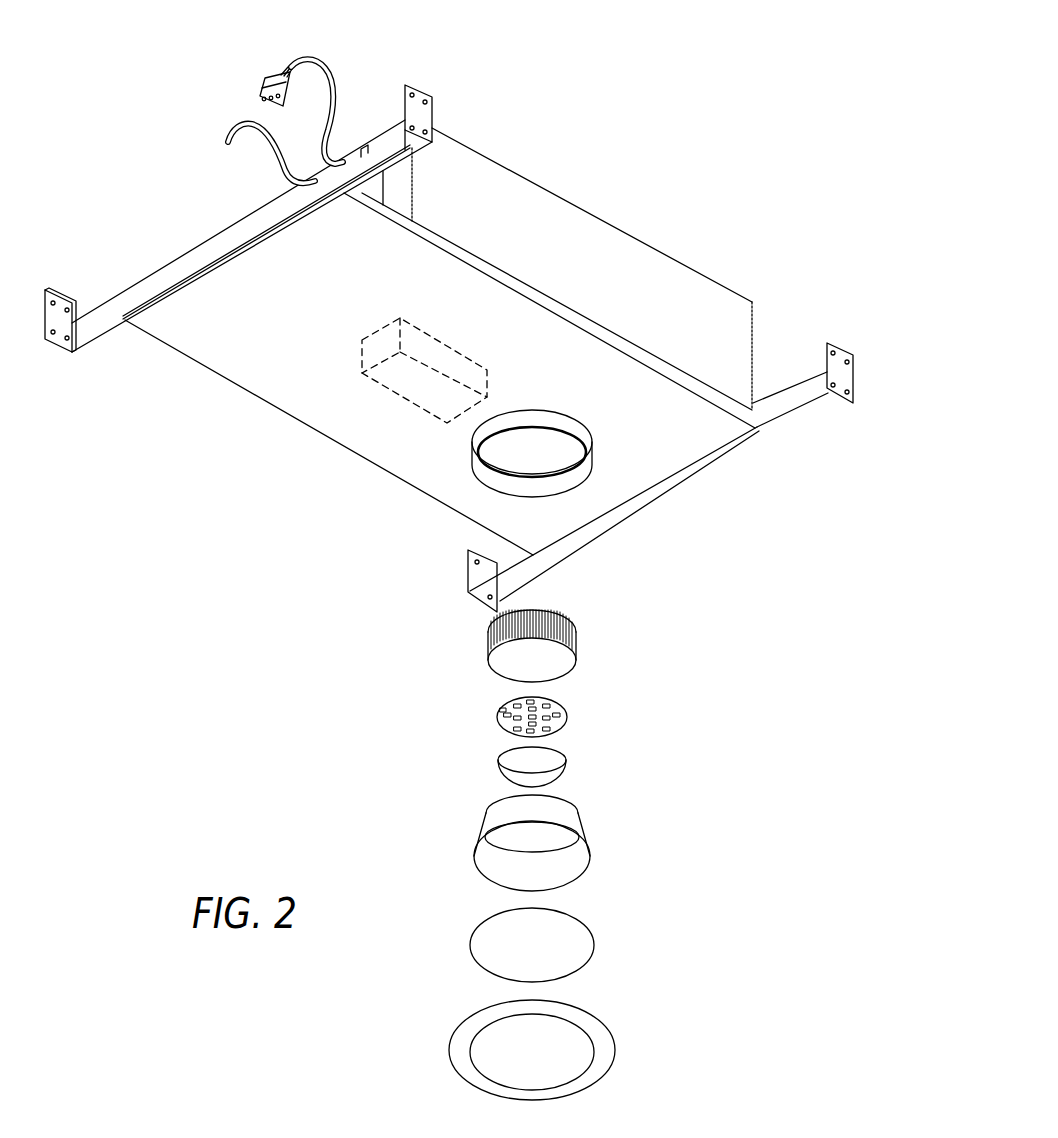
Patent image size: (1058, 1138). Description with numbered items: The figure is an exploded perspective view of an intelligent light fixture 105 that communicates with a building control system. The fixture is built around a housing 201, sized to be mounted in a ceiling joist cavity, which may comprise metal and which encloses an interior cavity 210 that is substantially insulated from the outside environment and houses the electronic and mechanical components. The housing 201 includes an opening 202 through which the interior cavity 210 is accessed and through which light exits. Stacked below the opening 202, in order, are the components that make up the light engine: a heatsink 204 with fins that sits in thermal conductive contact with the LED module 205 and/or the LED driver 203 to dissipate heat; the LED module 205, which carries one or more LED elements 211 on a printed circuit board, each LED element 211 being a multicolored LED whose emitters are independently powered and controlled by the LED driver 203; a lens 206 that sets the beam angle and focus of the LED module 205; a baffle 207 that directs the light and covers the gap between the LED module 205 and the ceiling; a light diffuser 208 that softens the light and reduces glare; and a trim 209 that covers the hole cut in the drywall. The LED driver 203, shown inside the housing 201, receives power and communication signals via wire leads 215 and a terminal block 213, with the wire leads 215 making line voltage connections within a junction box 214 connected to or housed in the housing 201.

The light fixture 105 is at (703, 43).
The housing 201 is at (617, 233).
The opening 202 is at (594, 448).
The LED driver 203 is at (378, 332).
The heatsink 204 is at (578, 645).
The LED module 205 is at (566, 718).
The lens 206 is at (567, 764).
The baffle 207 is at (590, 855).
The light diffuser 208 is at (594, 944).
The trim 209 is at (614, 1053).
The interior cavity 210 is at (520, 442).
The LED element 211 is at (503, 714).
The terminal block 213 is at (258, 93).
The junction box 214 is at (360, 143).
The wire leads 215 is at (220, 140).